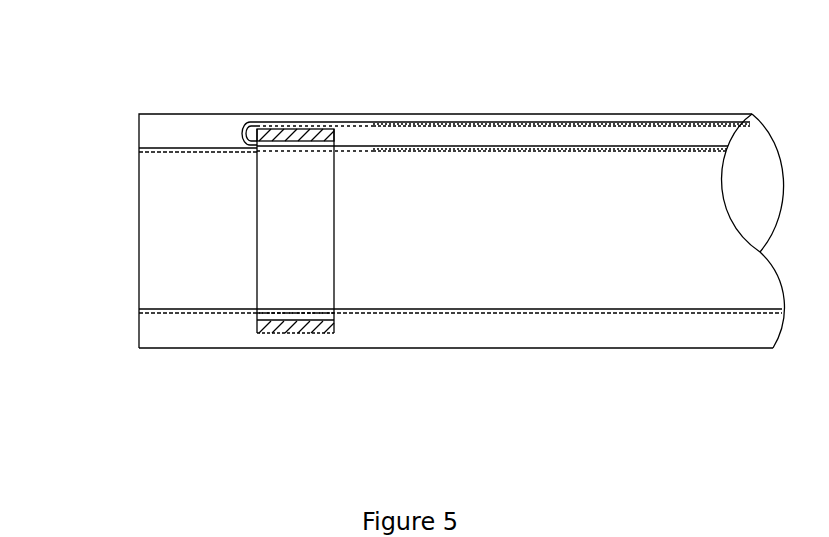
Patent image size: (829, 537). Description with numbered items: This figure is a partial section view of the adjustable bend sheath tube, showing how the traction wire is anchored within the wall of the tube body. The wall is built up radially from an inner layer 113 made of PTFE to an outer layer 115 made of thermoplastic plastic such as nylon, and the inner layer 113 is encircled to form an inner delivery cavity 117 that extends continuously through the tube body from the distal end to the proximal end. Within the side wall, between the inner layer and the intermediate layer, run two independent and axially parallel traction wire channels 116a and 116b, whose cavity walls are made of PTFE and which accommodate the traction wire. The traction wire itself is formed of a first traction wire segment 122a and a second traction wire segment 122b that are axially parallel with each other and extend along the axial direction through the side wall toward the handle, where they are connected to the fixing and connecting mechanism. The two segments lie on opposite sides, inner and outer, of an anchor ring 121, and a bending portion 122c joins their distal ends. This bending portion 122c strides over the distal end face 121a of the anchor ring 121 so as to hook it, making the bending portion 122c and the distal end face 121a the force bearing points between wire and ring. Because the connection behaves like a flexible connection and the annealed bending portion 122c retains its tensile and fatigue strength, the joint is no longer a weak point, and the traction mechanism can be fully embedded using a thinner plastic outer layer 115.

The inner layer 113 is at (139, 150).
The outer layer 115 is at (580, 329).
The traction wire channel 116a is at (547, 121).
The traction wire channel 116b is at (622, 146).
The inner delivery cavity 117 is at (172, 235).
The anchor ring 121 is at (285, 275).
The distal end face 121a is at (255, 279).
The first traction wire segment 122a is at (312, 124).
The second traction wire segment 122b is at (358, 145).
The bending portion 122c is at (243, 135).